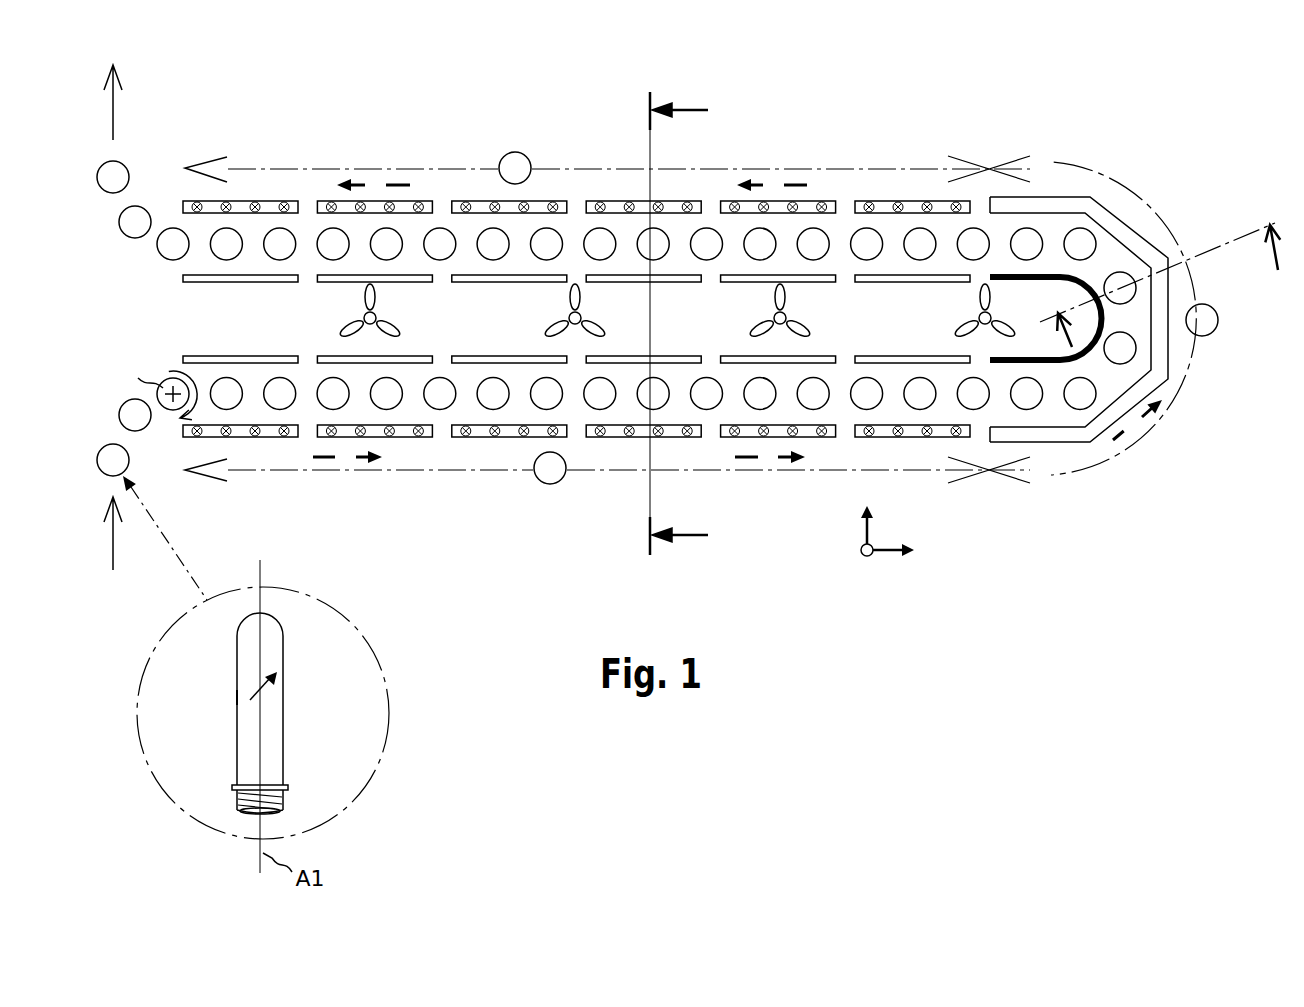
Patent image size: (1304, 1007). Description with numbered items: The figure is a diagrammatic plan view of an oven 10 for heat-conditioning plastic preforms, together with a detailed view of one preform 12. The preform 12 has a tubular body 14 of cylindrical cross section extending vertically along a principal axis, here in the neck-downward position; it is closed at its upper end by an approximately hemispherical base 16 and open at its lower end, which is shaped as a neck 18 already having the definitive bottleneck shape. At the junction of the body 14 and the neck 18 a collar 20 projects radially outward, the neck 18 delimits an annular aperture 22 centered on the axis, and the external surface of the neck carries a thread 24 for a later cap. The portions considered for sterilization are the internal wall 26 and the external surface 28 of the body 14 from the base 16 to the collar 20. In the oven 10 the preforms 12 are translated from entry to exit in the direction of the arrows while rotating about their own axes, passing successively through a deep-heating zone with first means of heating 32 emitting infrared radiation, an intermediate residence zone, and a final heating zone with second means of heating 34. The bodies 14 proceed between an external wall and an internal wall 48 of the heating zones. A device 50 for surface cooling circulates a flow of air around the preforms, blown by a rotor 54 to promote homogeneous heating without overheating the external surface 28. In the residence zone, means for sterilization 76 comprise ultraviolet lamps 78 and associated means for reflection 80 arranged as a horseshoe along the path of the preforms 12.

The oven 10 is at (697, 317).
The preform 12 is at (703, 238).
The body 14 is at (250, 750).
The base 16 is at (277, 622).
The neck 18 is at (226, 803).
The collar 20 is at (288, 787).
The annular aperture 22 is at (247, 814).
The thread 24 is at (285, 805).
The internal wall 26 is at (248, 702).
The external surface 28 is at (237, 696).
The first means of heating 32 is at (480, 438).
The second means of heating 34 is at (326, 207).
The internal wall 48 is at (473, 282).
The device for cooling 50 is at (346, 318).
The rotor 54 is at (786, 317).
The means for sterilization 76 is at (1145, 232).
The lamps 78 is at (1068, 443).
The means for reflection 80 is at (1060, 283).